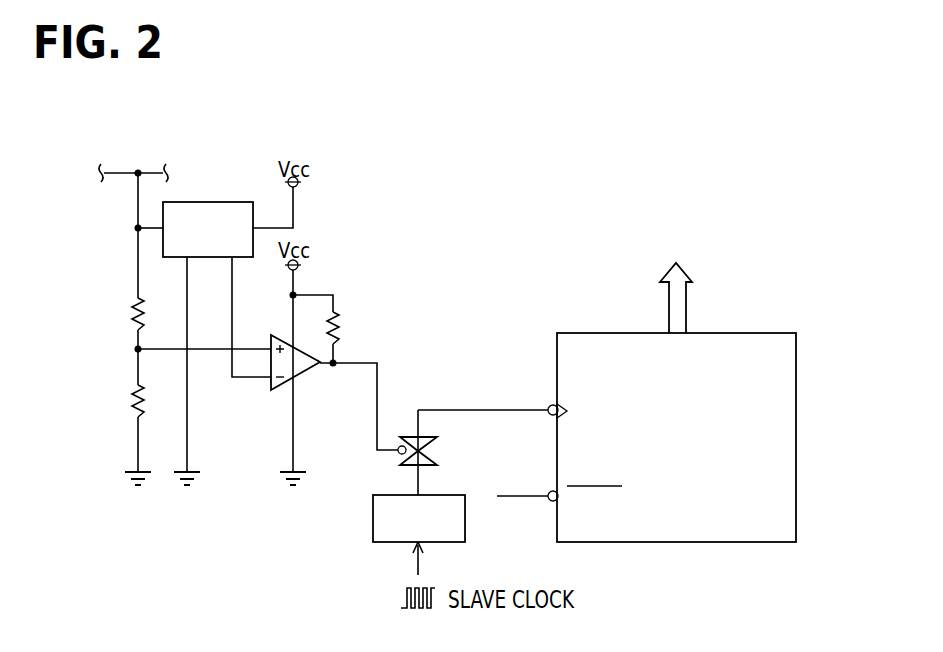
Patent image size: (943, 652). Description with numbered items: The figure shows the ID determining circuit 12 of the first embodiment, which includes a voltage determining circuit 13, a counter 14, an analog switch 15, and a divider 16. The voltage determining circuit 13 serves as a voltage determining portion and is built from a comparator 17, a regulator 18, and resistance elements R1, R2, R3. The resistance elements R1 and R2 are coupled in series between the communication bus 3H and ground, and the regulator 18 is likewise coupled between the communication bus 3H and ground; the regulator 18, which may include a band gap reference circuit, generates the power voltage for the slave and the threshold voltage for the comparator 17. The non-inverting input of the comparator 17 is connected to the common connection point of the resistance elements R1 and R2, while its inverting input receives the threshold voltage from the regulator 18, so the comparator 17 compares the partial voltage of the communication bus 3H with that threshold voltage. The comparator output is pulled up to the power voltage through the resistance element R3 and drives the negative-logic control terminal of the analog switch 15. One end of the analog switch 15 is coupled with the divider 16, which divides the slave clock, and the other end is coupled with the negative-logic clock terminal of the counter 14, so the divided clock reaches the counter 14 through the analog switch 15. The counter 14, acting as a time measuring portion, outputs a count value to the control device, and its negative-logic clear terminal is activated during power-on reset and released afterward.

The communication bus 3H is at (117, 172).
The ID determining circuit 12 is at (646, 361).
The voltage determining circuit 13 is at (316, 321).
The counter 14 is at (617, 332).
The analog switch 15 is at (410, 430).
The divider 16 is at (373, 518).
The comparator 17 is at (302, 373).
The regulator 18 is at (210, 201).
The resistance element R1 is at (131, 313).
The resistance element R2 is at (131, 400).
The resistance element R3 is at (347, 326).